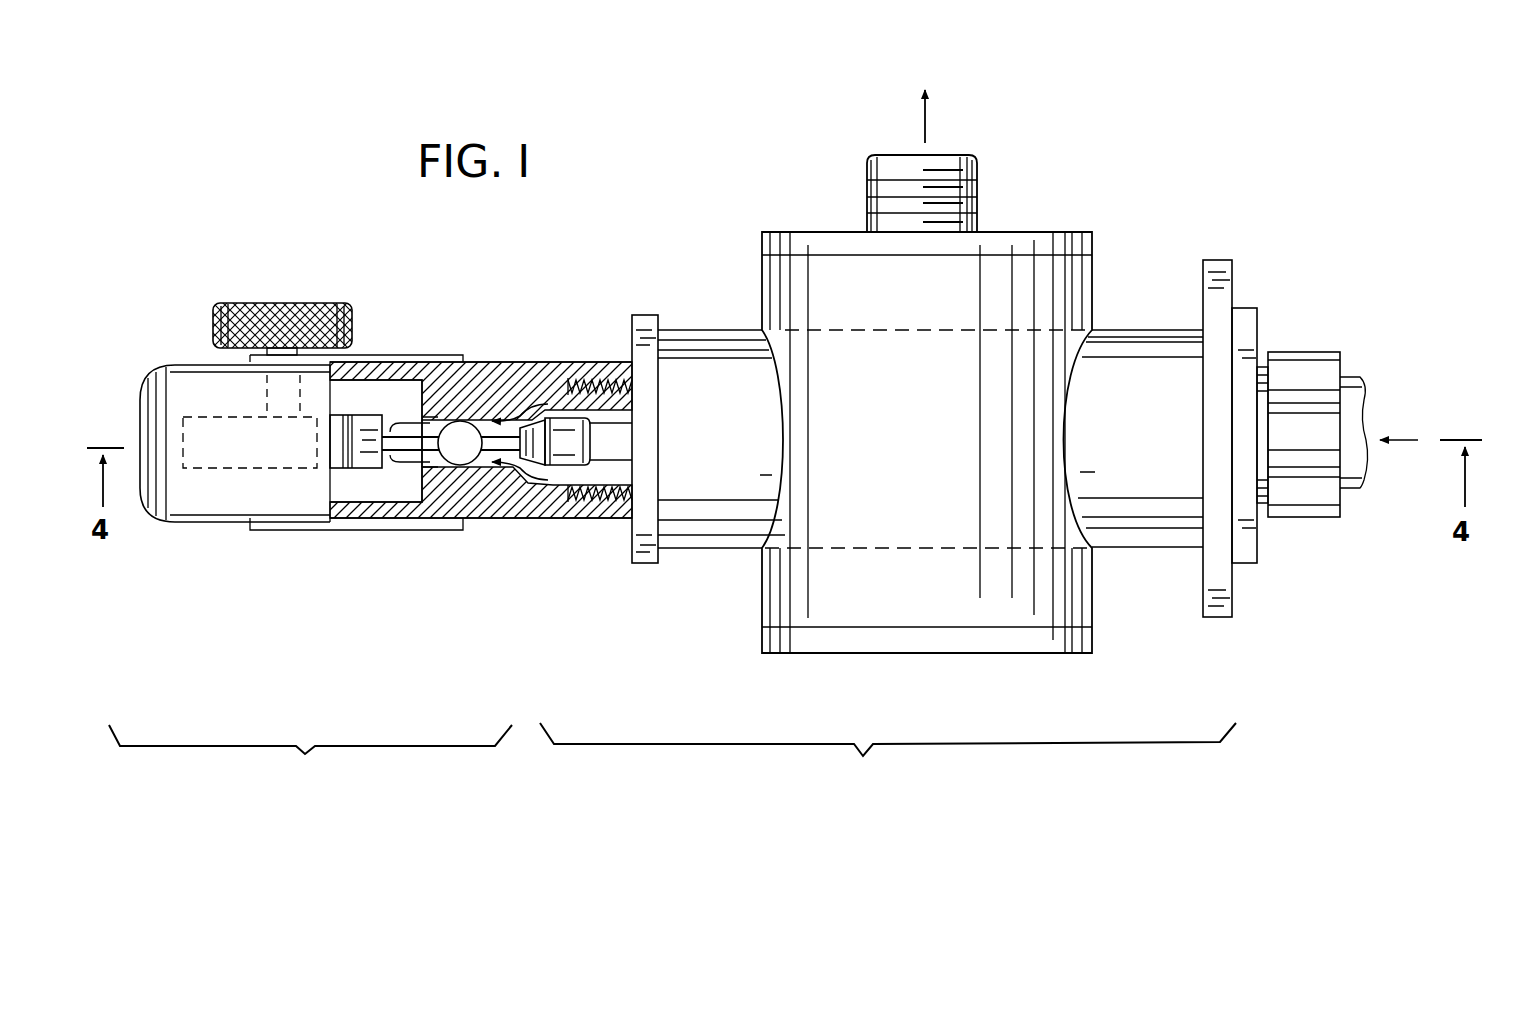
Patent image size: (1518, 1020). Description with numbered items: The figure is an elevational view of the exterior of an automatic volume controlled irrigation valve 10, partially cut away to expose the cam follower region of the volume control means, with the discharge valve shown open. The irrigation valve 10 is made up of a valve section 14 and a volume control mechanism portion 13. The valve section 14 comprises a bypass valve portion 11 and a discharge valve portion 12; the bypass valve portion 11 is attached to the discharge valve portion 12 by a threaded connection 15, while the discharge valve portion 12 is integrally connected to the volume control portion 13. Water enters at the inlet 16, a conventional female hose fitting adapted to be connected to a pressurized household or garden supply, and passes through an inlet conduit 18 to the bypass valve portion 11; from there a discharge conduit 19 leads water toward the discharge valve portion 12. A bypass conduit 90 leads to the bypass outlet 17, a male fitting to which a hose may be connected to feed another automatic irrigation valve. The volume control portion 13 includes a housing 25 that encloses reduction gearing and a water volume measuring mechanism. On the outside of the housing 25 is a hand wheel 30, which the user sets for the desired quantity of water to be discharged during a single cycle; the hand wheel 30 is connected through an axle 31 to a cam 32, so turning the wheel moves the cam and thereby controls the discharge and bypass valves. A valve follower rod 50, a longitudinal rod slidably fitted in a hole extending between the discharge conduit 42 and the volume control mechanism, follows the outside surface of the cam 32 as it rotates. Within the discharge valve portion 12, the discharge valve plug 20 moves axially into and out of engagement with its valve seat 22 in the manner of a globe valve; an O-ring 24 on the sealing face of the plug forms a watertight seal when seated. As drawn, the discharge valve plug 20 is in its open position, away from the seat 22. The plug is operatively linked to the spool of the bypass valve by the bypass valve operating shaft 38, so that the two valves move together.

The irrigation valve 10 is at (667, 212).
The bypass valve portion 11 is at (1022, 328).
The discharge valve portion 12 is at (570, 360).
The volume control mechanism portion 13 is at (423, 515).
The valve section 14 is at (1000, 441).
The threaded connection 15 is at (613, 489).
The inlet 16 is at (1358, 378).
The bypass outlet 17 is at (975, 181).
The inlet conduit 18 is at (1157, 328).
The discharge conduit 19 is at (724, 330).
The discharge valve plug 20 is at (578, 420).
The valve seat 22 is at (512, 480).
The O-ring 24 is at (556, 416).
The housing 25 is at (218, 508).
The hand wheel 30 is at (273, 316).
The axle 31 is at (262, 386).
The cam 32 is at (348, 416).
The bypass valve operating shaft 38 is at (627, 440).
The discharge conduit 42 is at (458, 458).
The valve follower rod 50 is at (467, 425).
The bypass conduit 90 is at (1073, 593).